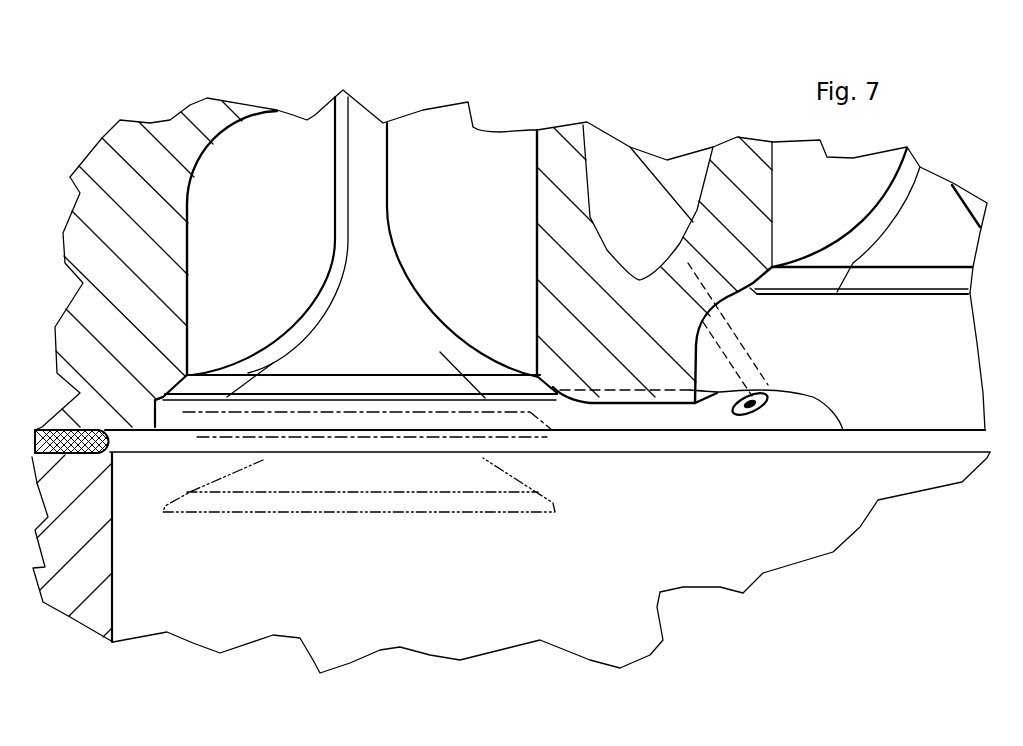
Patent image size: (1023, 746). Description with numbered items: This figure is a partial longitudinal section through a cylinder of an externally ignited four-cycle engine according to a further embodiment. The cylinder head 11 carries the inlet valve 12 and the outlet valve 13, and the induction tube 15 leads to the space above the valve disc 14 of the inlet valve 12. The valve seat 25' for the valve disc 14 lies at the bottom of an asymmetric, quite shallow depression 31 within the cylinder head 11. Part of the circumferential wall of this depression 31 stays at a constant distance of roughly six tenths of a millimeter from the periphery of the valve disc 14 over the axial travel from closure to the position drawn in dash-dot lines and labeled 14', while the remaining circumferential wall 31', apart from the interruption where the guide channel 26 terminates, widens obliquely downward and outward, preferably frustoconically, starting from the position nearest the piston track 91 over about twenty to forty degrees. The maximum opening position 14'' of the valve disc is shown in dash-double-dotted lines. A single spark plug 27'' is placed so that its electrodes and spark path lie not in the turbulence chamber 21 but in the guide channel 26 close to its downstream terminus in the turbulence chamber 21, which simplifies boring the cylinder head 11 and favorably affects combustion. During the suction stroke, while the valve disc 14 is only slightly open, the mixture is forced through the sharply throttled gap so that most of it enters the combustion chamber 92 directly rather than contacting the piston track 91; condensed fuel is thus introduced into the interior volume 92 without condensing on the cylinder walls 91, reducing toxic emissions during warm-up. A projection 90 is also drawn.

The cylinder head 11 is at (550, 143).
The inlet valve 12 is at (357, 153).
The outlet valve 13 is at (870, 232).
The valve disc 14 is at (356, 357).
The valve disc position in dash-dot lines 14' is at (384, 449).
The maximum opening position of inlet valve disc 14'' is at (359, 514).
The induction tube 15 is at (243, 143).
The turbulence chamber 21 is at (900, 351).
The valve seat 25' is at (363, 343).
The guide channel 26 is at (646, 403).
The spark plug 27'' is at (733, 373).
The depression 31 is at (181, 444).
The remaining circumferential wall 31' is at (106, 448).
The projection 90 is at (803, 398).
The piston track 91 is at (112, 553).
The combustion chamber 92 is at (853, 513).